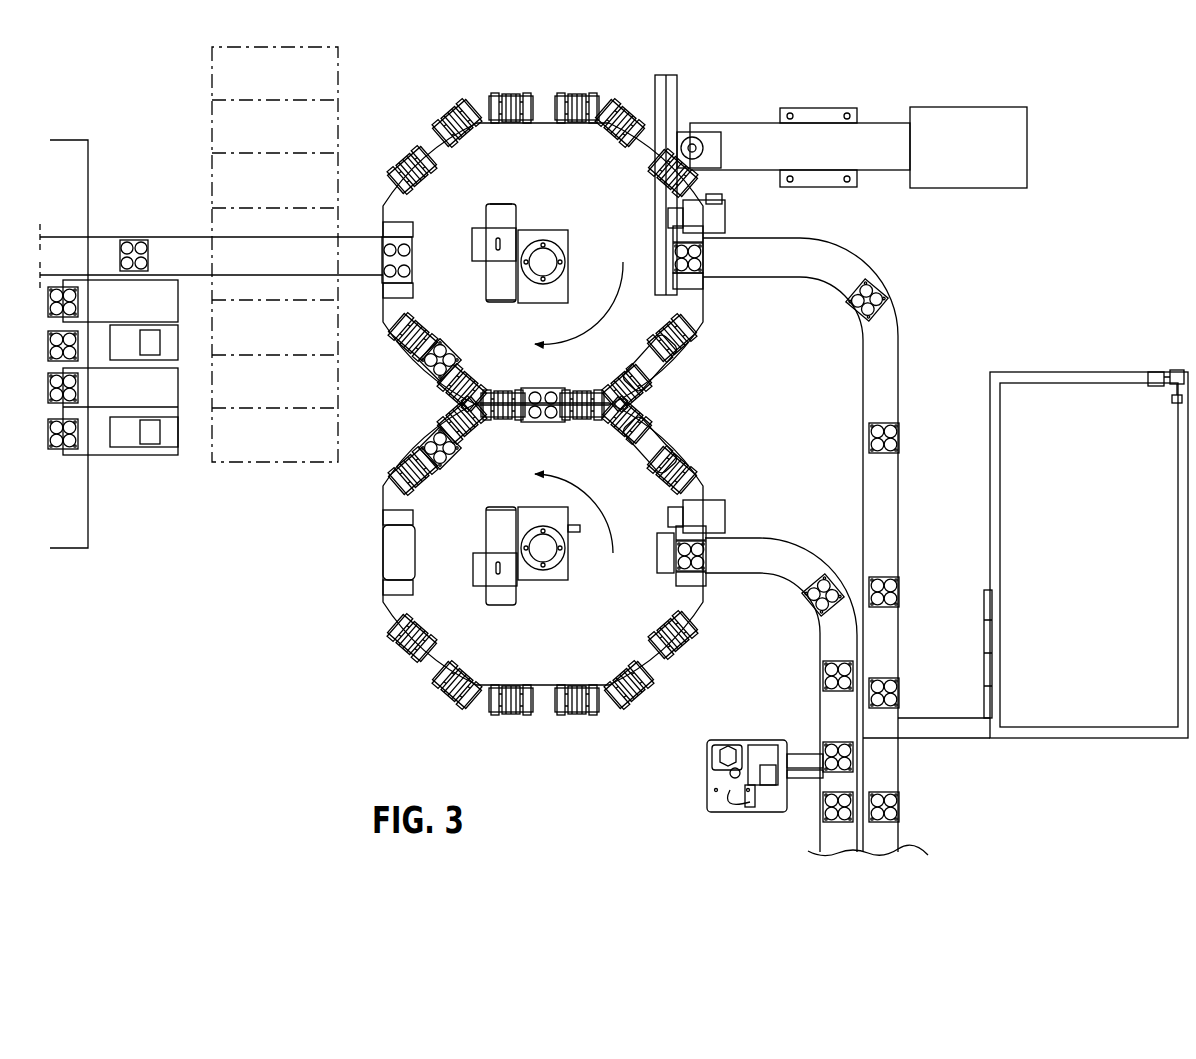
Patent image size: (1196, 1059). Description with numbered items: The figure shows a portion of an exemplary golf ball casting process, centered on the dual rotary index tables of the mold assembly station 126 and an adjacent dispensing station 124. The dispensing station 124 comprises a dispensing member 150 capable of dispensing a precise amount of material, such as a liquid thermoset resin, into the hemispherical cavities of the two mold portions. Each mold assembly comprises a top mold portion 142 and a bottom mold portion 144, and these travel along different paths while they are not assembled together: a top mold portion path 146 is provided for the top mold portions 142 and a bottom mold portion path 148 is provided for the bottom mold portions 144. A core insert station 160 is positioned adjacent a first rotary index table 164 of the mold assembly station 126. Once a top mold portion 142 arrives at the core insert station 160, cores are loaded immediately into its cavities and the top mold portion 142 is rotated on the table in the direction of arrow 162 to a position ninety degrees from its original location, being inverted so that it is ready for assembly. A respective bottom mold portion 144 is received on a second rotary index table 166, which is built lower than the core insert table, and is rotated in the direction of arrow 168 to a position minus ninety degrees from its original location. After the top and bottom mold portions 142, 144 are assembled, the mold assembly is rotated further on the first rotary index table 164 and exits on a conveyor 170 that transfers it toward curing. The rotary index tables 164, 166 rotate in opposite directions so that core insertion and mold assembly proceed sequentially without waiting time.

The dispensing station 124 is at (708, 806).
The mold assembly station 126 is at (363, 562).
The top mold portion 142 is at (886, 293).
The bottom mold portion 144 is at (816, 585).
The top mold portion path 146 is at (902, 372).
The bottom mold portion path 148 is at (818, 633).
The dispensing member 150 is at (812, 754).
The core insert station 160 is at (705, 120).
The arrow 162 is at (583, 287).
The first rotary index table 164 is at (477, 98).
The second rotary index table 166 is at (515, 717).
The arrow 168 is at (581, 528).
The conveyor 170 is at (170, 236).